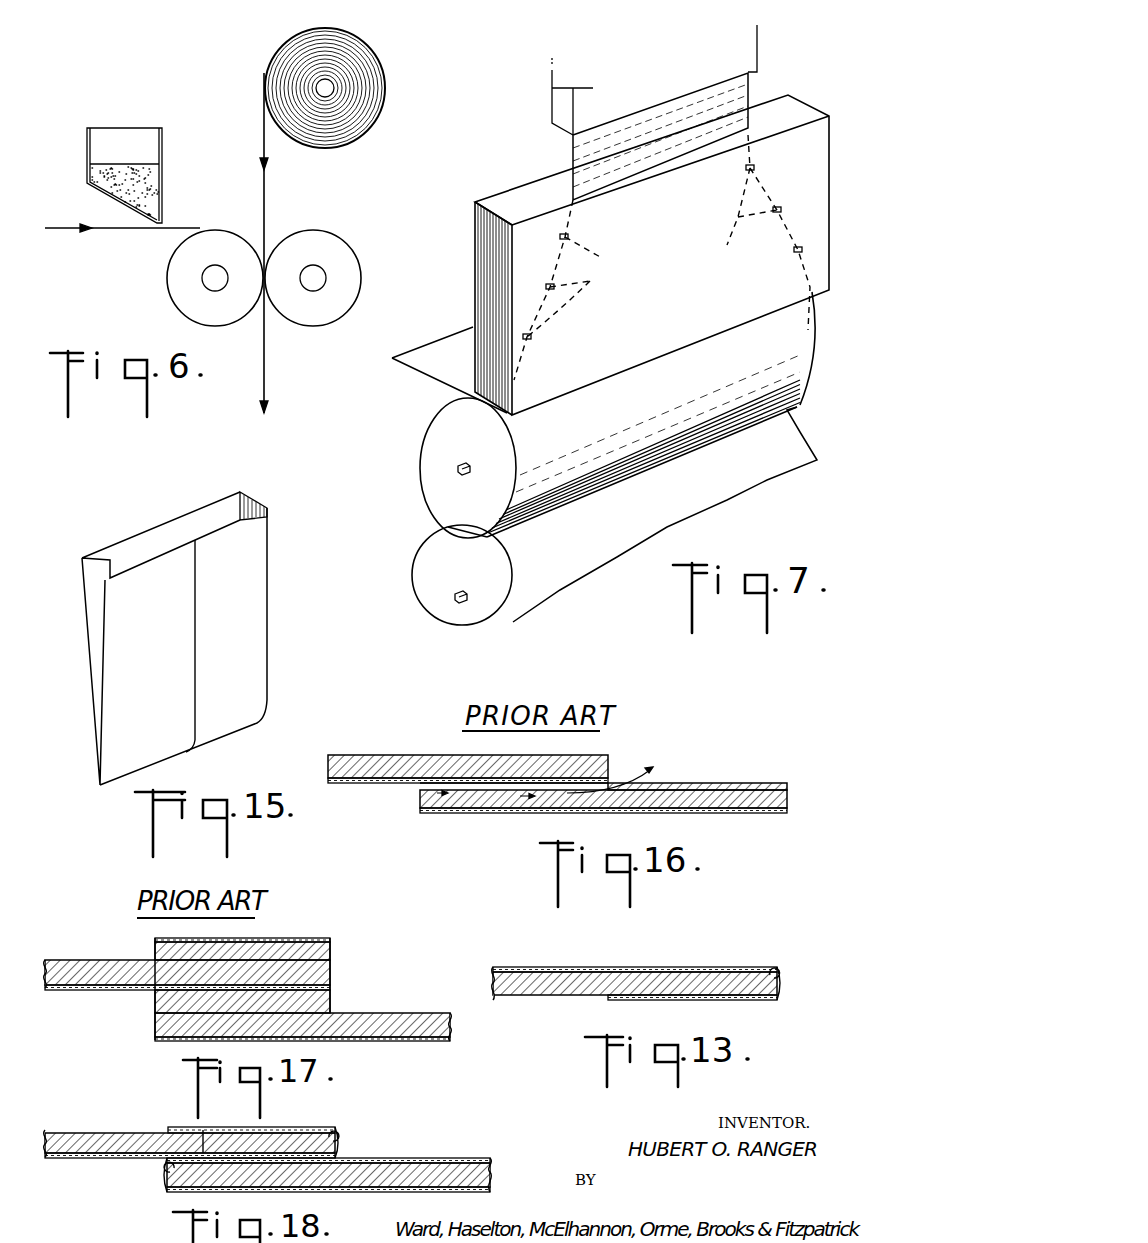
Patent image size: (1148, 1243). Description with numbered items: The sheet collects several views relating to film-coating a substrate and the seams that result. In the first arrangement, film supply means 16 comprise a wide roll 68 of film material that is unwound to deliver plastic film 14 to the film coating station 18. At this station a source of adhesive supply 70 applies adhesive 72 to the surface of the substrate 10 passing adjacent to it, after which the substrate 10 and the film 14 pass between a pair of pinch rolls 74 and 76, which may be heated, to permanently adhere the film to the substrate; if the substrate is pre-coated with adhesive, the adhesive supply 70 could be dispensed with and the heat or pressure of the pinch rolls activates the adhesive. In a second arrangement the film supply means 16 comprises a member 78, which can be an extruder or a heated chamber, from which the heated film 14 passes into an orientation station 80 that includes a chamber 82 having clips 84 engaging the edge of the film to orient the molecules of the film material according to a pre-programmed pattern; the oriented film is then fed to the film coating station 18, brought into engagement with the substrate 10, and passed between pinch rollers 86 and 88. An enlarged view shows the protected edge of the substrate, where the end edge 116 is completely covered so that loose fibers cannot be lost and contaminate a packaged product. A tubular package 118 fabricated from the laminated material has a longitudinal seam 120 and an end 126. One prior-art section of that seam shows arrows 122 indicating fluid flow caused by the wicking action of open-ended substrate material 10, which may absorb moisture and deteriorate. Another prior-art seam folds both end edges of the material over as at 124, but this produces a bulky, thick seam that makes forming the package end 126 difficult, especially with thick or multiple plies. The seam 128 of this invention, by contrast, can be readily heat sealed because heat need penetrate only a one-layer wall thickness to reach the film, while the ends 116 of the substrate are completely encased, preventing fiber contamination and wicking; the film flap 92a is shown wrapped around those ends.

In FIG. 6, the substrate 10 is at (117, 232).
In FIG. 7, the substrate 10 is at (428, 377).
In FIG. 16, the substrate 10 is at (580, 762).
In FIG. 17, the substrate 10 is at (83, 963).
In FIG. 13, the substrate 10 is at (685, 975).
In FIG. 18, the substrate 10 is at (93, 1138).
In FIG. 6, the film 14 is at (267, 208).
In FIG. 7, the film 14 is at (735, 100).
In FIG. 16, the film 14 is at (350, 780).
In FIG. 17, the film 14 is at (288, 938).
In FIG. 13, the film 14 is at (578, 970).
In FIG. 18, the film 14 is at (438, 1183).
In FIG. 6, the film supply means 16 is at (392, 85).
In FIG. 7, the film supply means 16 is at (505, 177).
In FIG. 15, the film supply means 16 is at (168, 635).
In FIG. 6, the film coating station 18 is at (147, 280).
In FIG. 7, the film coating station 18 is at (414, 508).
In FIG. 6, the wide roll of film material 68 is at (308, 135).
In FIG. 6, the source of adhesive supply 70 is at (130, 135).
In FIG. 6, the adhesive 72 is at (147, 185).
In FIG. 6, the pinch roll 74 is at (198, 312).
In FIG. 6, the pinch roll 76 is at (318, 310).
In FIG. 7, the member 78 is at (552, 92).
In FIG. 7, the orientation station 80 is at (469, 277).
In FIG. 7, the chamber 82 is at (487, 302).
In FIG. 7, the clips 84 is at (662, 257).
In FIG. 7, the pinch roller 86 is at (428, 442).
In FIG. 7, the pinch roller 88 is at (428, 565).
In FIG. 13, the fabric flap 92a is at (737, 1000).
In FIG. 18, the fabric flap 92a is at (240, 1130).
In FIG. 13, the end edge 116 is at (767, 972).
In FIG. 18, the end edge 116 is at (337, 1142).
In FIG. 15, the tubular package 118 is at (80, 625).
In FIG. 15, the longitudinal seam 120 is at (197, 578).
In FIG. 16, the arrows 122 is at (413, 787).
In FIG. 17, the folded-over end edges 124 is at (293, 958).
In FIG. 15, the package end 126 is at (222, 737).
In FIG. 18, the seam 128 is at (203, 1130).